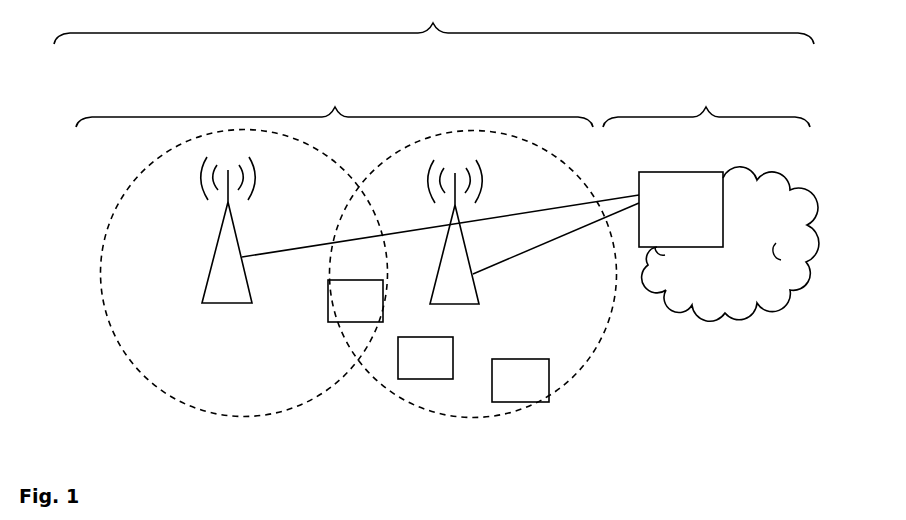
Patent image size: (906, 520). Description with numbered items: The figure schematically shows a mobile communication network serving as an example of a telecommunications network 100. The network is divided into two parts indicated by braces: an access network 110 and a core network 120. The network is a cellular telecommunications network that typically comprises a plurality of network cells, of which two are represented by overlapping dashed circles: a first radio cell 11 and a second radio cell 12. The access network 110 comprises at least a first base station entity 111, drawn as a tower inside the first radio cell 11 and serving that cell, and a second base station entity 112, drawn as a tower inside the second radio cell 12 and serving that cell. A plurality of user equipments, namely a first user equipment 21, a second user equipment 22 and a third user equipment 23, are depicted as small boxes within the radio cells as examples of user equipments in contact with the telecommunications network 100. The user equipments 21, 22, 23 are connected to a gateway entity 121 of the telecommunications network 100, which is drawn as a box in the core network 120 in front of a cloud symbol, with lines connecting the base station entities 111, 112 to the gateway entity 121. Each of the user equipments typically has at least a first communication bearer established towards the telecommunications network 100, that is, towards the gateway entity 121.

The telecommunications network 100 is at (434, 22).
The access network 110 is at (334, 103).
The core network 120 is at (711, 200).
The first radio cell 11 is at (148, 378).
The second radio cell 12 is at (393, 393).
The first base station entity 111 is at (420, 230).
The second base station entity 112 is at (533, 232).
The gateway entity 121 is at (681, 209).
The first user equipment 21 is at (355, 301).
The second user equipment 22 is at (425, 358).
The third user equipment 23 is at (520, 380).